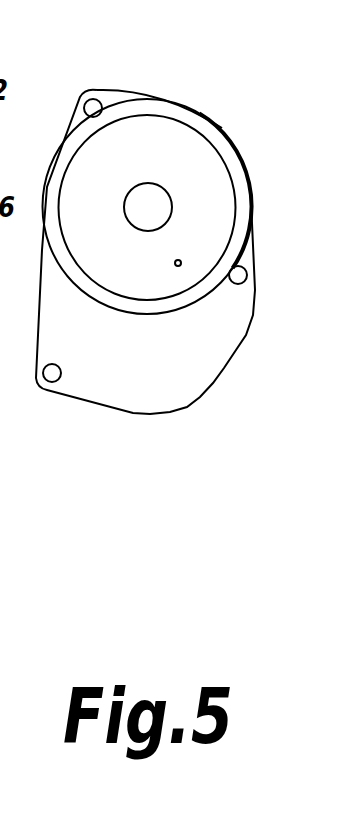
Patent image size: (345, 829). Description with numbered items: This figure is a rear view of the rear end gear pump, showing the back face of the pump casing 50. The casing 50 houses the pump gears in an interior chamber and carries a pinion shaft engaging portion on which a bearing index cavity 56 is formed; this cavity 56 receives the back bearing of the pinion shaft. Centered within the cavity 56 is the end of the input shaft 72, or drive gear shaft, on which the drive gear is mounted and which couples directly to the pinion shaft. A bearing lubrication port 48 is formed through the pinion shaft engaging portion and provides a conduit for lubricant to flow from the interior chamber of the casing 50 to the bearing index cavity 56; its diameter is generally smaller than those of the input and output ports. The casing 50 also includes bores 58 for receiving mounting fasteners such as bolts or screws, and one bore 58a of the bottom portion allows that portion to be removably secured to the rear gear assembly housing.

The bearing lubrication port 48 is at (181, 264).
The pump casing 50 is at (115, 377).
The bearing index cavity 56 is at (222, 200).
The bores 58 is at (100, 107).
The bore 58a is at (247, 274).
The input shaft 72 is at (144, 192).